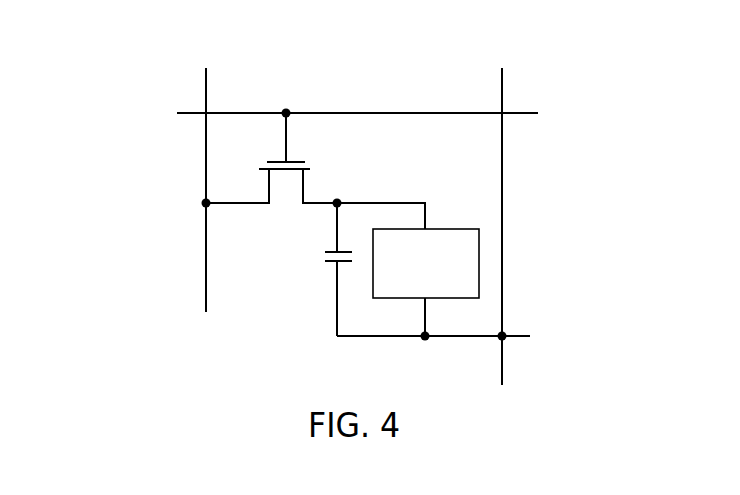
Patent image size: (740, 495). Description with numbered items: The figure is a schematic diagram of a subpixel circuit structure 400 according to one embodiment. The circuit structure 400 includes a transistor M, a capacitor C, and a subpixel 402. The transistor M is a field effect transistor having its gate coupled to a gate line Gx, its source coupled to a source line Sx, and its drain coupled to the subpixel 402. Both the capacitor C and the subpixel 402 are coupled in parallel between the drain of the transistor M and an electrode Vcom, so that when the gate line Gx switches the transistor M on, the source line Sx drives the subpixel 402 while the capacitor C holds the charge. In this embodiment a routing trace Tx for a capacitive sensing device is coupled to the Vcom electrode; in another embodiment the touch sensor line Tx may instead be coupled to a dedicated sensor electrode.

The subpixel circuit structure 400 is at (110, 54).
The subpixel 402 is at (445, 289).
The source line Sx is at (205, 175).
The routing trace Tx is at (500, 211).
The gate line Gx is at (377, 112).
The electrode Vcom is at (465, 336).
The transistor M is at (271, 158).
The capacitor C is at (325, 269).